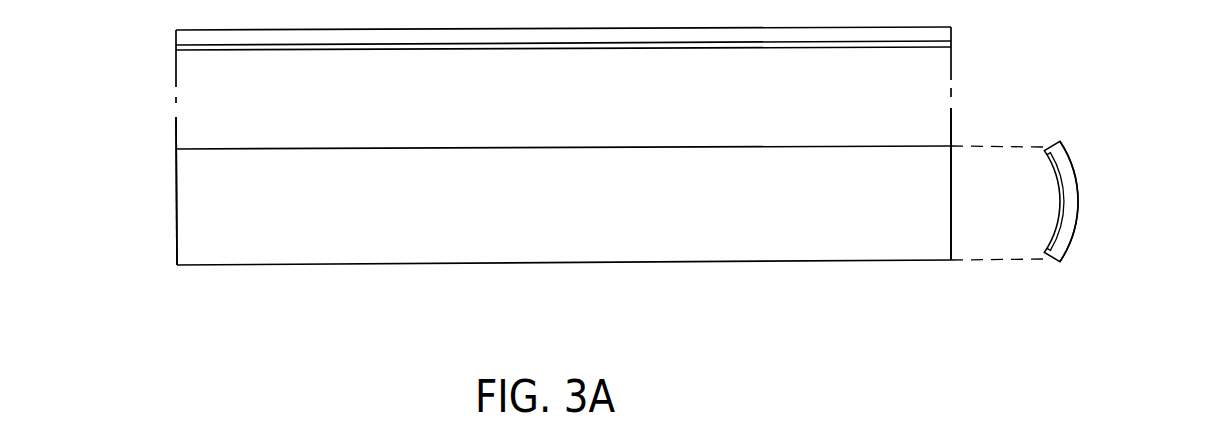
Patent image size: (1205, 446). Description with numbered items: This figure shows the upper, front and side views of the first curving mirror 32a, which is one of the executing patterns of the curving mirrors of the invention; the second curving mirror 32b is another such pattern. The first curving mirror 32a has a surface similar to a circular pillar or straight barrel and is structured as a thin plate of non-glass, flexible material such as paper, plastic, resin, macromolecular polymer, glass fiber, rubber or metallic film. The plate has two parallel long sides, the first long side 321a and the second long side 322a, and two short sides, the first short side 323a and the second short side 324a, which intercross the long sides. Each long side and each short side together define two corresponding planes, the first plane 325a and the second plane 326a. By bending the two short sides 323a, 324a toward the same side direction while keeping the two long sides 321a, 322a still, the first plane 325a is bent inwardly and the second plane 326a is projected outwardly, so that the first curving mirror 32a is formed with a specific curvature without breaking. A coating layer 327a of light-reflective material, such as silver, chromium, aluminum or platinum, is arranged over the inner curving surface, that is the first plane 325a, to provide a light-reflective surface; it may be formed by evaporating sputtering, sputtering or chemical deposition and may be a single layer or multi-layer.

The No. 1 curving mirror 32a is at (130, 122).
The No. 2 curving mirror 32b is at (176, 424).
The first long side 321a is at (388, 149).
The second long side 322a is at (560, 263).
The first short side 323a is at (176, 212).
The second short side 324a is at (957, 184).
The first plane 325a is at (1063, 152).
The second plane 326a is at (1080, 210).
The coating layer 327a is at (612, 48).